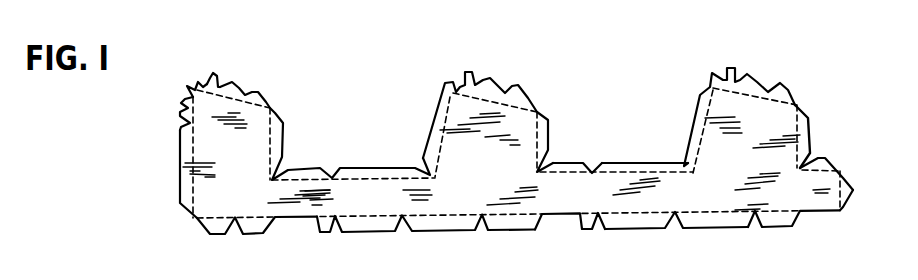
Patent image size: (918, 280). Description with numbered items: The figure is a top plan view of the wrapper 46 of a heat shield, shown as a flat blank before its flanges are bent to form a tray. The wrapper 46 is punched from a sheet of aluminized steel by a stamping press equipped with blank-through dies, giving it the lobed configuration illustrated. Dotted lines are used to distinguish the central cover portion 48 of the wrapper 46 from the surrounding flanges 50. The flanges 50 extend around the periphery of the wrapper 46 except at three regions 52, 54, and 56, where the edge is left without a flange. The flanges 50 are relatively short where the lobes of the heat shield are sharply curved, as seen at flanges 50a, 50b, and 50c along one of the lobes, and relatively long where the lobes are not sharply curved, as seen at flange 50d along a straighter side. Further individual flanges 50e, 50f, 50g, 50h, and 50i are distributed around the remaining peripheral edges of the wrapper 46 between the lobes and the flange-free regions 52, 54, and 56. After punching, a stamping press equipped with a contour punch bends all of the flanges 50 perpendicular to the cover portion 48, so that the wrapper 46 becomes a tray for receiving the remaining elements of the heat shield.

The wrapper 46 is at (644, 72).
The cover portion 48 is at (488, 166).
The flanges 50 is at (279, 137).
The flange 50a is at (180, 107).
The flange 50b is at (193, 82).
The flange 50c is at (213, 76).
The flange 50d is at (182, 183).
The flange 50e is at (852, 197).
The flange 50f is at (571, 172).
The flange 50g is at (640, 168).
The flange 50h is at (808, 117).
The flange 50i is at (822, 160).
The region 52 is at (300, 225).
The region 54 is at (566, 220).
The region 56 is at (807, 216).